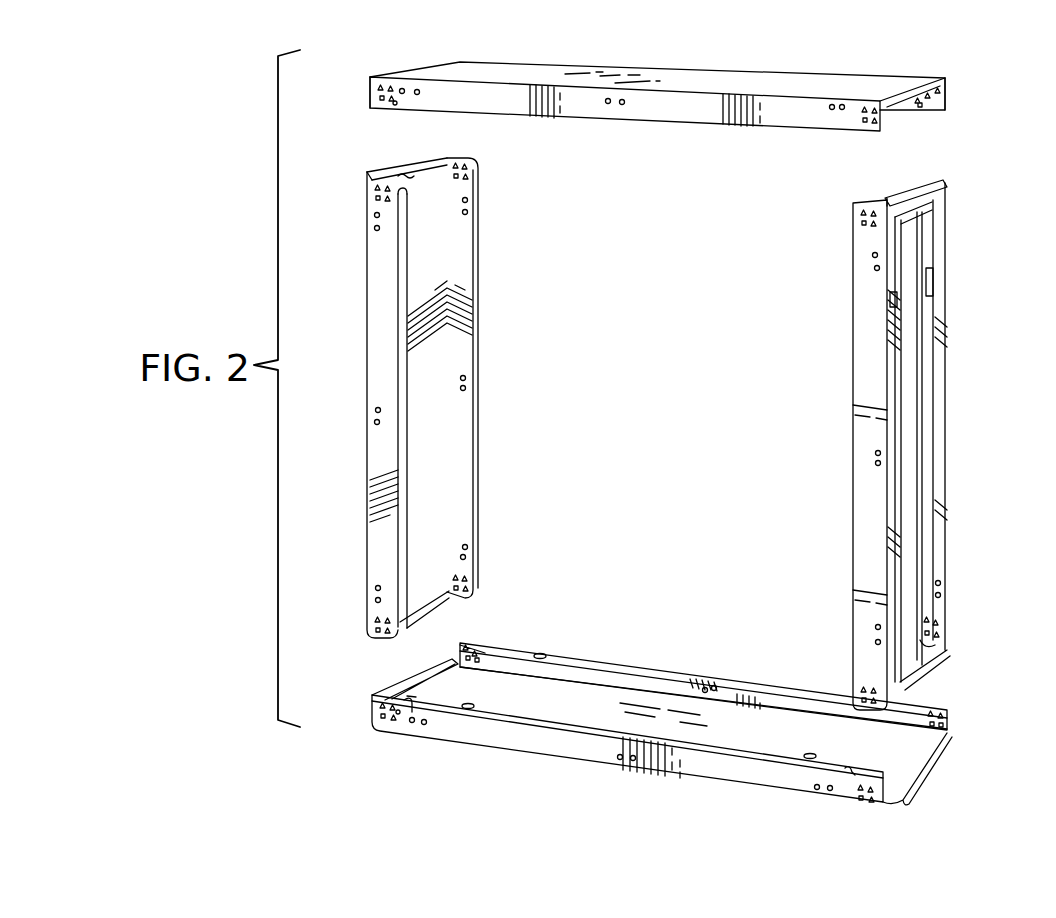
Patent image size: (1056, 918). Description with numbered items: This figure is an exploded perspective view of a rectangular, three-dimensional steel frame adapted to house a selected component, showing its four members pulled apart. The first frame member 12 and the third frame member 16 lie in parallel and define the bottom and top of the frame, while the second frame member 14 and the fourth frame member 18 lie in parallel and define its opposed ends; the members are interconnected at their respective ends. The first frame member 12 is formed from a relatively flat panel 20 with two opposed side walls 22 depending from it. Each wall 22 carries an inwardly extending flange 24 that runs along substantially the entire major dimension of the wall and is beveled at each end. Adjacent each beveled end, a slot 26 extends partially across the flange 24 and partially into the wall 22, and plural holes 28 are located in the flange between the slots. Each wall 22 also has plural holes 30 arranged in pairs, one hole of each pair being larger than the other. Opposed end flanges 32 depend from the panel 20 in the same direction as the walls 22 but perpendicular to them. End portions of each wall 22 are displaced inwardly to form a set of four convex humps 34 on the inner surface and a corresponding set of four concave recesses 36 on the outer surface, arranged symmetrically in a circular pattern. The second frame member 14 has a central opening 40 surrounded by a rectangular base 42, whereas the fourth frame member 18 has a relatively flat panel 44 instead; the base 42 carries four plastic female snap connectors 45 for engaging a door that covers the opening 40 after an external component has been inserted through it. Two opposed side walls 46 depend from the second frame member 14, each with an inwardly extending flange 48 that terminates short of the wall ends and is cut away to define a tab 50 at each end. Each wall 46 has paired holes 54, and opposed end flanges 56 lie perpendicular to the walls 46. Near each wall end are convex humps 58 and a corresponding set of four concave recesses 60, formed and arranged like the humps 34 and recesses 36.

The first frame member 12 is at (935, 780).
The second frame member 14 is at (955, 410).
The third frame member 16 is at (718, 63).
The fourth frame member 18 is at (480, 380).
The panel 20 is at (828, 78).
The side walls 22 is at (700, 105).
The flange 24 is at (900, 111).
The slot 26 is at (411, 714).
The holes 28 is at (542, 653).
The holes 30 is at (418, 90).
The end flanges 32 is at (922, 84).
The humps 34 is at (947, 108).
The recesses 36 is at (368, 108).
The central opening 40 is at (905, 470).
The rectangular base 42 is at (940, 372).
The panel 44 is at (438, 467).
The female snap connectors 45 is at (936, 272).
The side walls 46 is at (376, 268).
The flange 48 is at (478, 292).
The tab 50 is at (408, 195).
The holes 54 is at (468, 212).
The end flanges 56 is at (420, 166).
The humps 58 is at (462, 162).
The recesses 60 is at (372, 197).